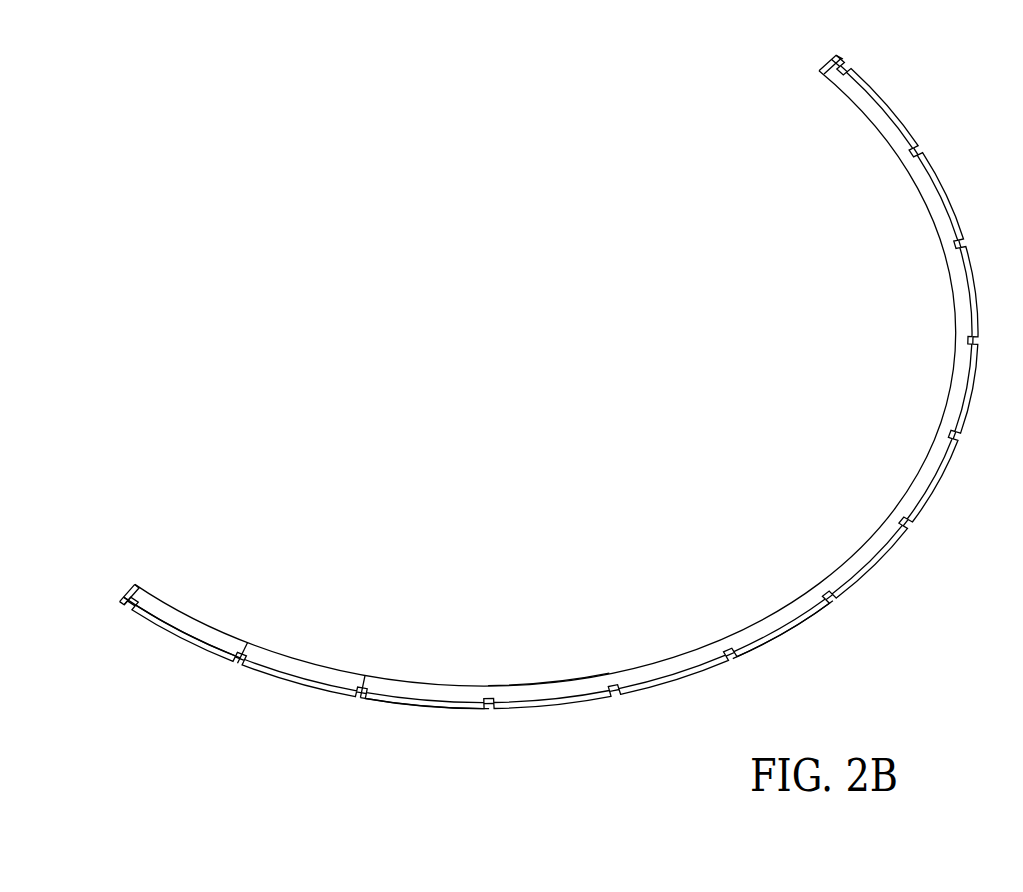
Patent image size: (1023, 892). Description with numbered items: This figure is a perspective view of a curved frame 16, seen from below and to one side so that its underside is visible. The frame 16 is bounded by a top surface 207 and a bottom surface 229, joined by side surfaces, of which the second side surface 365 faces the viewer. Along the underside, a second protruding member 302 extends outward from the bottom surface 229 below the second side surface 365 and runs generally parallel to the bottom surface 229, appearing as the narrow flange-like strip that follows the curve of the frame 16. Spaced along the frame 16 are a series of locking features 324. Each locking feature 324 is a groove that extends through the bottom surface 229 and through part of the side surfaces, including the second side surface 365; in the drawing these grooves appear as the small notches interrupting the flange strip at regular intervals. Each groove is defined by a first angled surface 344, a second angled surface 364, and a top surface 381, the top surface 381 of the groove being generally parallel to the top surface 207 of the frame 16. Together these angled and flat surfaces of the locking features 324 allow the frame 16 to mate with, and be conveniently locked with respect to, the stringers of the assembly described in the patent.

The frame 16 is at (806, 463).
The top surface 207 is at (833, 103).
The first angled surface 344 is at (130, 610).
The second angled surface 364 is at (133, 615).
The locking feature 324 is at (243, 665).
The top surface of the groove 381 is at (370, 680).
The bottom surface 229 is at (432, 708).
The second side surface 365 is at (580, 677).
The second protruding member 302 is at (790, 633).